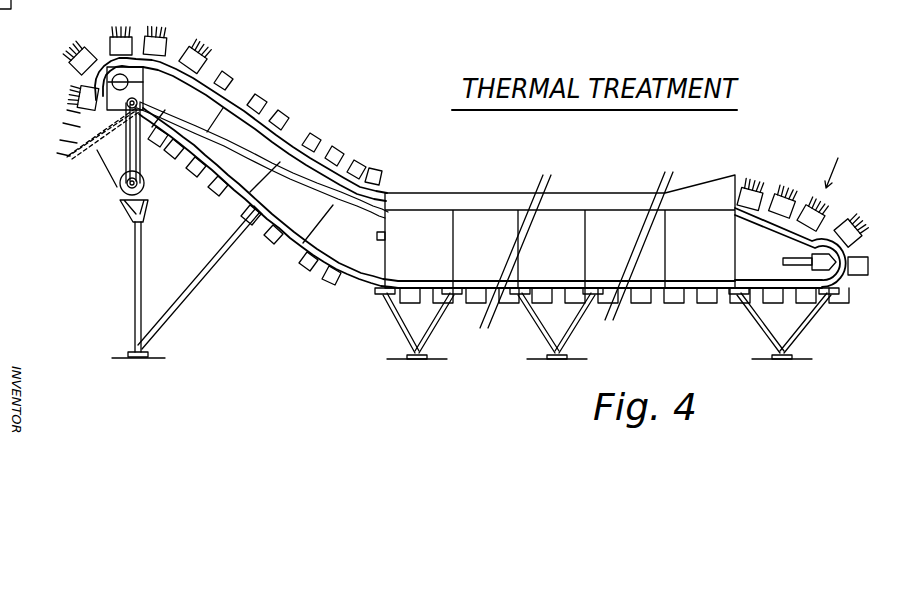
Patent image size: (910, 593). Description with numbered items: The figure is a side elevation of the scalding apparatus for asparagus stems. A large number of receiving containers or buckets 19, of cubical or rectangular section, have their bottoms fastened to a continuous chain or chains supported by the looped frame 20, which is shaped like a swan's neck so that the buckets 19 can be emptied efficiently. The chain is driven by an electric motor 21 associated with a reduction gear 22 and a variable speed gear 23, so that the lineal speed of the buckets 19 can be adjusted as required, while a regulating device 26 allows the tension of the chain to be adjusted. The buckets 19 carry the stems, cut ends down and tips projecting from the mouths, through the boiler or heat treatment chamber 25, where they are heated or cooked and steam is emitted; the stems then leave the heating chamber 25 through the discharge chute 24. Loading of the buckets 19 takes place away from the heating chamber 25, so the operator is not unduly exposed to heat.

The receiving containers or buckets 19 is at (785, 195).
The looped frame 20 is at (197, 283).
The electric motor 21 is at (118, 203).
The reduction gear 22 is at (93, 94).
The variable speed gear 23 is at (120, 185).
The discharge chute 24 is at (72, 170).
The heat treatment chamber 25 is at (492, 218).
The regulating device 26 is at (815, 247).